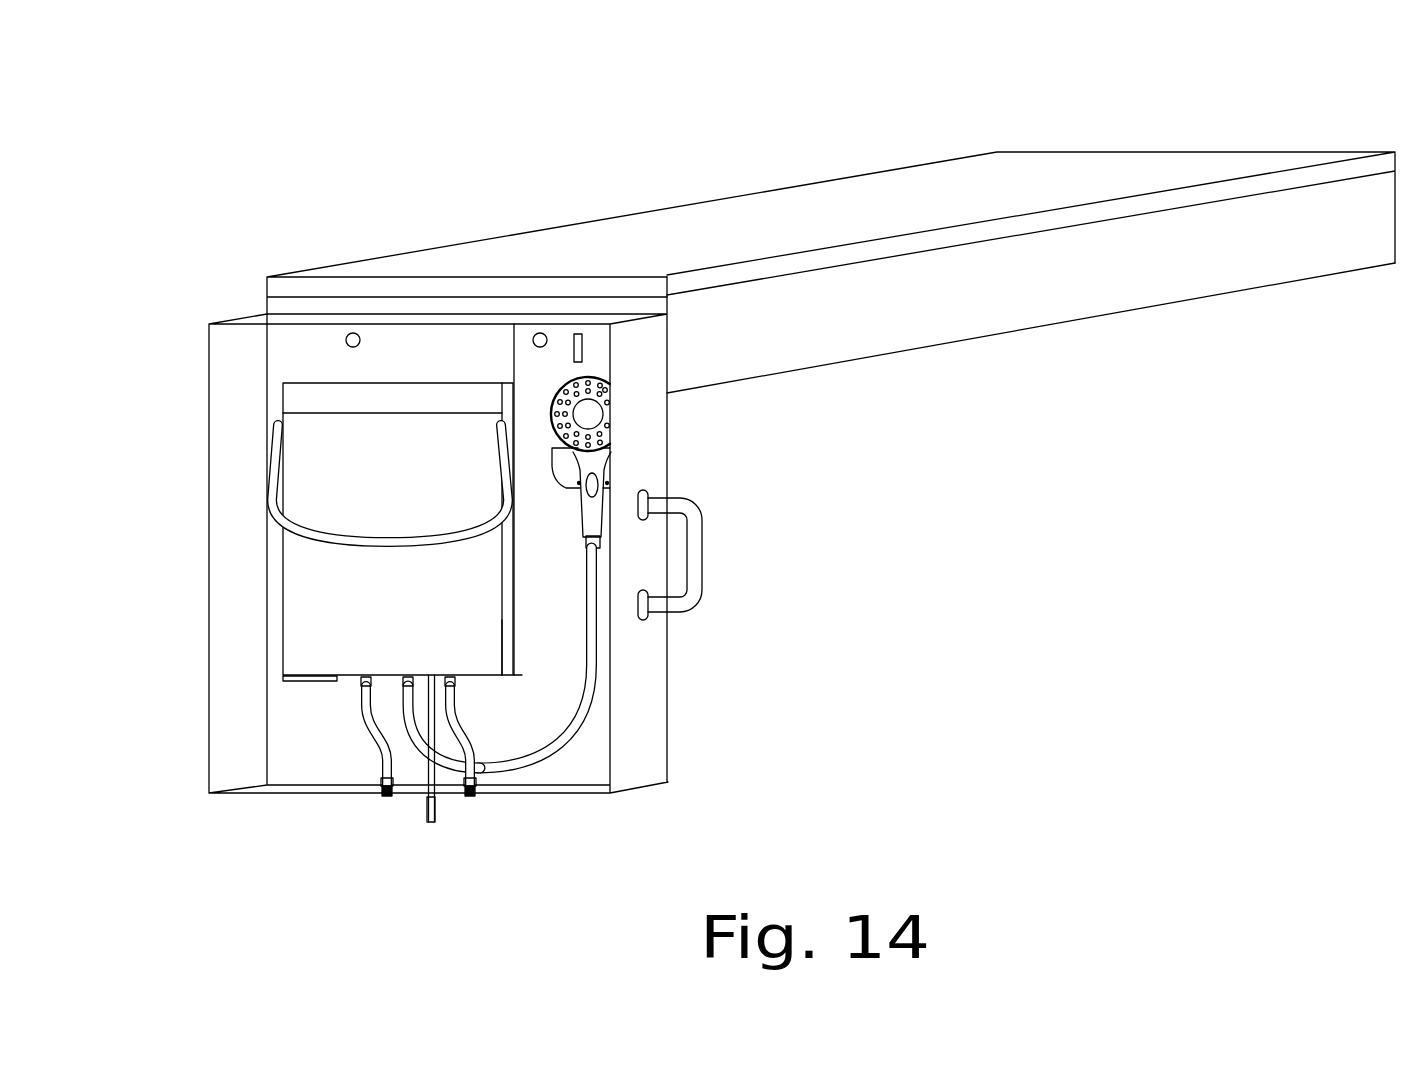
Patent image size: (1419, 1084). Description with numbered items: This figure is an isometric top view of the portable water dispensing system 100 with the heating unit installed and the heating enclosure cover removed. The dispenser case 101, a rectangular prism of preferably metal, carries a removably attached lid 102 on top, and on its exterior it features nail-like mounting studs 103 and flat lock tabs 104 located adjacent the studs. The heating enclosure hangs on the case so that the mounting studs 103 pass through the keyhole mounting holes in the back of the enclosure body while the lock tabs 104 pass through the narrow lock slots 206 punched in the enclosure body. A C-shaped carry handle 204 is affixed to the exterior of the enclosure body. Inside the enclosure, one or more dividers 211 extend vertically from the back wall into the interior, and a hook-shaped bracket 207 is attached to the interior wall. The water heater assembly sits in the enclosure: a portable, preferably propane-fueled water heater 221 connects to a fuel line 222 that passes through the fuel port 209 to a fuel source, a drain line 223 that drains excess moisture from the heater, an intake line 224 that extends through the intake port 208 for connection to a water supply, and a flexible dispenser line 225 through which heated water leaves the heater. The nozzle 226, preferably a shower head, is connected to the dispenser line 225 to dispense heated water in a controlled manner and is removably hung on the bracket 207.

The portable water dispensing system 100 is at (438, 416).
The dispenser case 101 is at (1070, 318).
The lid 102 is at (1155, 170).
The mounting studs 103 is at (533, 339).
The lock tabs 104 is at (582, 357).
The carry handle 204 is at (692, 543).
The lock slots 206 is at (578, 333).
The bracket 207 is at (567, 465).
The intake port 208 is at (385, 797).
The fuel port 209 is at (472, 798).
The dividers 211 is at (168, 782).
The water heater 221 is at (298, 556).
The fuel line 222 is at (466, 752).
The drain line 223 is at (430, 823).
The intake line 224 is at (373, 720).
The dispenser line 225 is at (590, 710).
The nozzle 226 is at (598, 417).